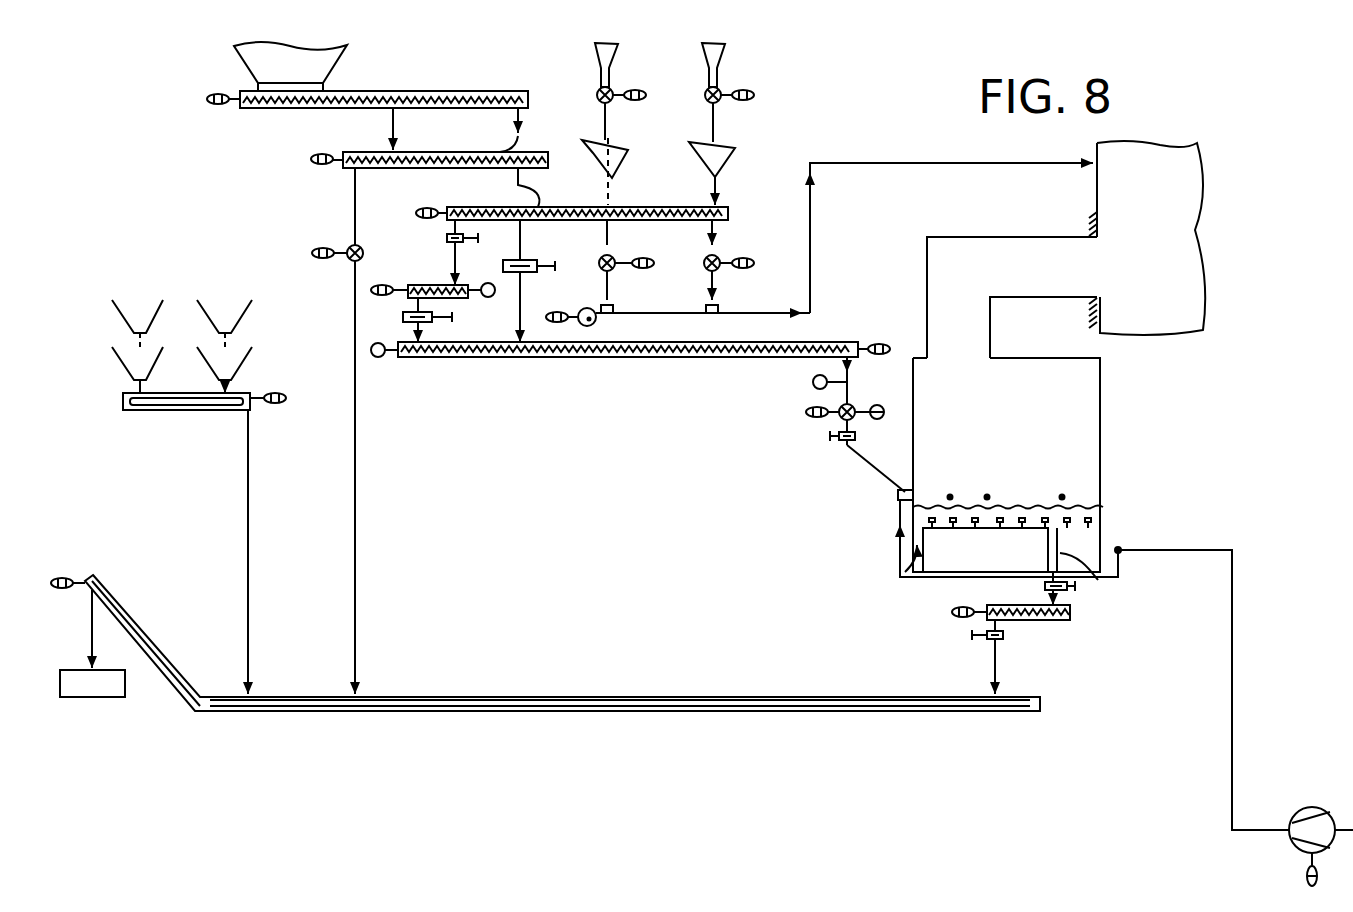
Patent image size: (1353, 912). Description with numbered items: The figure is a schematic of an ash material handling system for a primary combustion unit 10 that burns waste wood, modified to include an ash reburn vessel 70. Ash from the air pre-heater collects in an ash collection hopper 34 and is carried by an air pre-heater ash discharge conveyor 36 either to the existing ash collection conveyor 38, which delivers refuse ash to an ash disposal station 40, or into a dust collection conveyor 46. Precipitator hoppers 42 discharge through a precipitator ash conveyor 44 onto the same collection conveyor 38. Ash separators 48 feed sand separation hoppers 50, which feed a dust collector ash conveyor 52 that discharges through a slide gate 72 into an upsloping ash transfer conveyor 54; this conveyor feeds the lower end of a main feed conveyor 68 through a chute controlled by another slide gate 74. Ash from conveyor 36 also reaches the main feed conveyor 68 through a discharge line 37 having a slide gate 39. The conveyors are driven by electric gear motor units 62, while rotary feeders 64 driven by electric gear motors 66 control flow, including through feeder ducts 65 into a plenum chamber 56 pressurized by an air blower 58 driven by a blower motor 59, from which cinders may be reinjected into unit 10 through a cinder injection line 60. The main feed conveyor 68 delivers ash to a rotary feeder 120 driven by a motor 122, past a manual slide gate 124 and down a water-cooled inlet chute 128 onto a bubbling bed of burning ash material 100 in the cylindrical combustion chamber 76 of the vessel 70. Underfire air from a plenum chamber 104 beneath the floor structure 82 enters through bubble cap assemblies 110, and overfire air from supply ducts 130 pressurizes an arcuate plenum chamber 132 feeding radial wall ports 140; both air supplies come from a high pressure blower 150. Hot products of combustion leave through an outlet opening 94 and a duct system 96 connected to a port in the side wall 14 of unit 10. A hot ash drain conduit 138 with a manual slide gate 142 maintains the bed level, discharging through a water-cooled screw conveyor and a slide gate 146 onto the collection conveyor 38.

The primary combustion unit 10 is at (1138, 280).
The side wall 14 is at (1097, 182).
The ash collection hopper 34 is at (328, 62).
The air pre-heater ash discharge conveyor 36 is at (240, 107).
The discharge line 37 is at (517, 307).
The ash collection conveyor 38 is at (393, 694).
The slide gate 39 is at (485, 236).
The ash disposal station 40 is at (102, 690).
The precipitator hoppers 42 is at (199, 360).
The precipitator ash conveyor 44 is at (148, 412).
The dust collection conveyor 46 is at (360, 151).
The ash separators 48 is at (705, 55).
The sand separation hoppers 50 is at (700, 157).
The dust collector ash conveyor 52 is at (613, 206).
The ash transfer conveyor 54 is at (410, 285).
The plenum chamber 56 is at (627, 313).
The air blower 58 is at (596, 322).
The blower motor 59 is at (558, 326).
The cinder injection line 60 is at (810, 250).
The electric gear motor units 62 is at (212, 95).
The rotary feeders 64 is at (597, 93).
The feeder ducts 65 is at (603, 300).
The electric gear motors 66 is at (647, 93).
The main feed conveyor 68 is at (670, 358).
The ash reburn vessel 70 is at (1103, 424).
The slide gate 72 is at (455, 244).
The slide gate 74 is at (432, 320).
The combustion chamber 76 is at (978, 446).
The floor structure 82 is at (993, 517).
The outlet opening 94 is at (980, 340).
The duct system 96 is at (963, 237).
The bubbling bed of burning ash material 100 is at (903, 558).
The plenum chamber 104 is at (970, 563).
The bubble cap assemblies 110 is at (1088, 517).
The rotary feeder 120 is at (854, 405).
The motor 122 is at (806, 415).
The manual slide gate 124 is at (845, 446).
The inlet chute 128 is at (870, 463).
The supply ducts 130 is at (900, 562).
The plenum chamber 132 is at (898, 495).
The hot ash drain conduit 138 is at (1098, 580).
The radial wall ports 140 is at (1062, 497).
The manual slide gate 142 is at (1072, 592).
The slide gate 146 is at (993, 643).
The blower 150 is at (1310, 807).